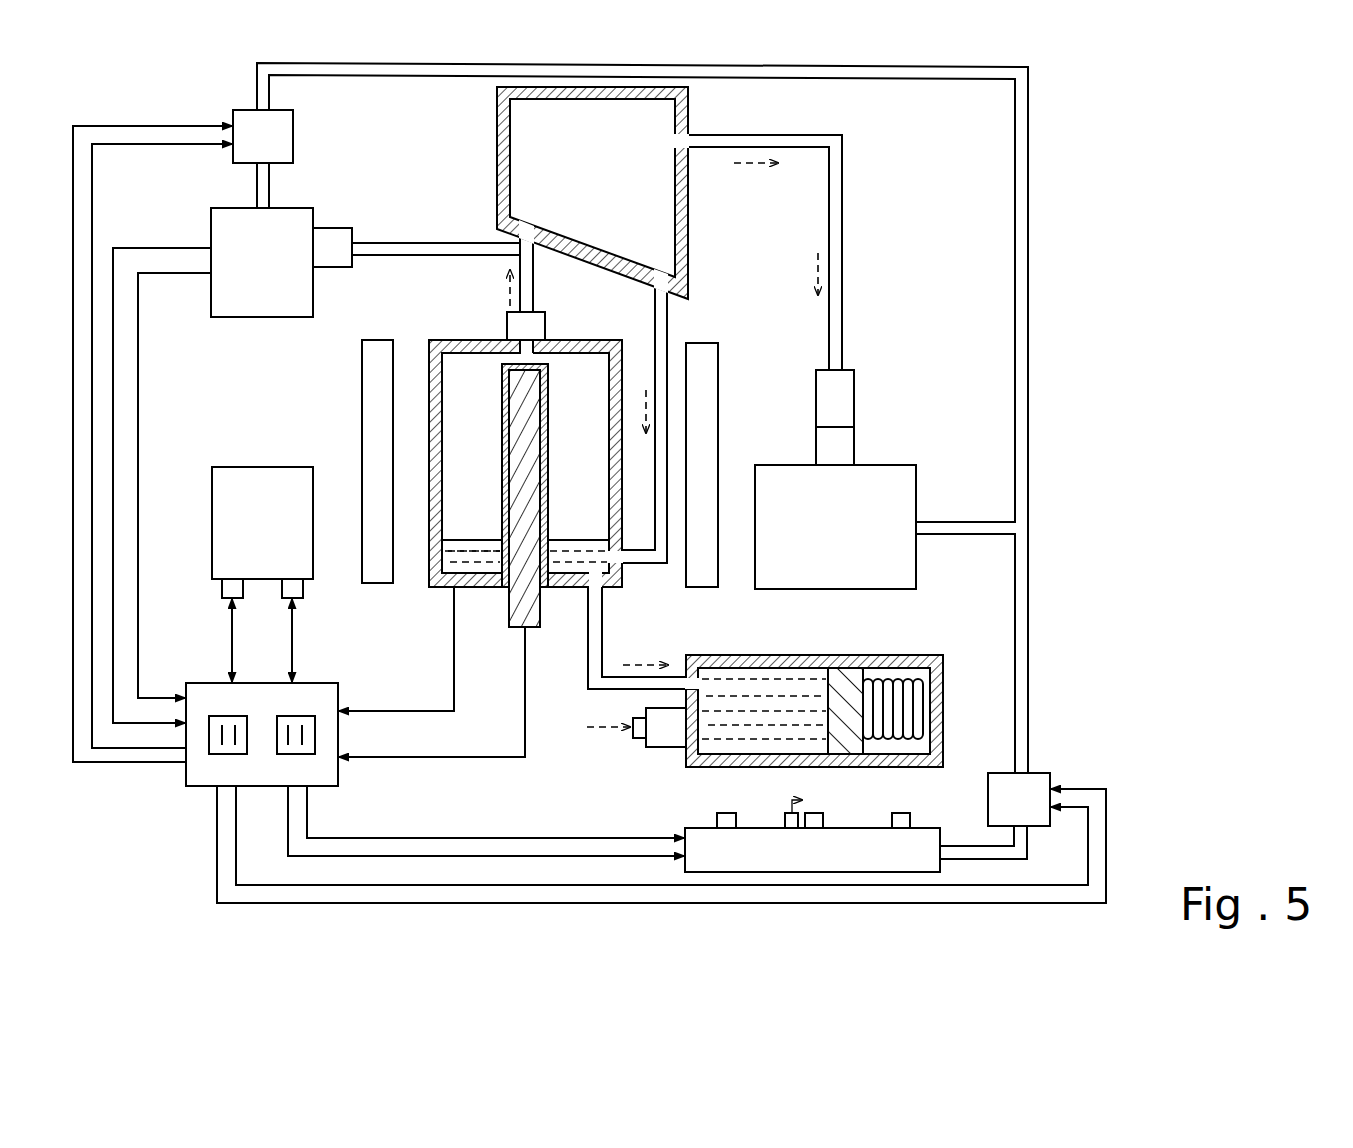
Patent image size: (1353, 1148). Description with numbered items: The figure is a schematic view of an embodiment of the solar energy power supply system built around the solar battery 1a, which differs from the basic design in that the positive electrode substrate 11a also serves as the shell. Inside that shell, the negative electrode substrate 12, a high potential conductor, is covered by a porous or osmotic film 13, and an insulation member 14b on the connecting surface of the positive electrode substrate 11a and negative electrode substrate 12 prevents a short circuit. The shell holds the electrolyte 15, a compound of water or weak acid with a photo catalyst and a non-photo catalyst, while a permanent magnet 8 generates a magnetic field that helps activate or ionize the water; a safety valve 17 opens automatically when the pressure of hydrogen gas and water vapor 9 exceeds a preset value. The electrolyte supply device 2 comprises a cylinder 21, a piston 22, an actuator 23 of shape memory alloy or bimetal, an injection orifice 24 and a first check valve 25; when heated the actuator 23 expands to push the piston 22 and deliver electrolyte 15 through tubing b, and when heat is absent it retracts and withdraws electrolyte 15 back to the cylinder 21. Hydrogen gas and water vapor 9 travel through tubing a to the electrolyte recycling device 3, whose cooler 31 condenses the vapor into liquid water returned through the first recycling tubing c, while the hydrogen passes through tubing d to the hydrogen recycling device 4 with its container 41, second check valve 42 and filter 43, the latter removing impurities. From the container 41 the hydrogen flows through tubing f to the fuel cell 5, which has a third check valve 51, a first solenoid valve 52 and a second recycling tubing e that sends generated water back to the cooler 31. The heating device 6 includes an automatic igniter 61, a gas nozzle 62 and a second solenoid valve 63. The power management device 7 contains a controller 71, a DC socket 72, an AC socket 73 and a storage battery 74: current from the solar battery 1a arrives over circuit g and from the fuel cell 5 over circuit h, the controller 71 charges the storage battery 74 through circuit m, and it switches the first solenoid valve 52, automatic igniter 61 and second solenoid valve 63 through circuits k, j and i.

The solar battery 1a is at (425, 330).
The electrolyte supply device 2 is at (777, 687).
The electrolyte recycling device 3 is at (590, 193).
The hydrogen recycling device 4 is at (830, 478).
The fuel cell 5 is at (296, 206).
The heating device 6 is at (680, 820).
The power management device 7 is at (192, 672).
The permanent magnet 8 is at (368, 380).
The hydrogen gas and water vapor 9 is at (537, 176).
The positive electrode substrate 11a is at (465, 590).
The negative electrode substrate 12 is at (518, 627).
The film 13 is at (549, 364).
The insulation member 14b is at (547, 588).
The electrolyte 15 is at (448, 554).
The safety valve 17 is at (508, 311).
The cylinder 21 is at (708, 655).
The piston 22 is at (855, 675).
The actuator 23 is at (913, 687).
The injection orifice 24 is at (632, 724).
The first check valve 25 is at (646, 744).
The cooler 31 is at (500, 114).
The container 41 is at (788, 477).
The second check valve 42 is at (818, 450).
The filter 43 is at (848, 414).
The third check valve 51 is at (328, 234).
The first solenoid valve 52 is at (285, 128).
The automatic igniter 61 is at (785, 815).
The gas nozzle 62 is at (722, 813).
The second solenoid valve 63 is at (1035, 769).
The controller 71 is at (312, 775).
The DC socket 72 is at (215, 751).
The AC socket 73 is at (310, 716).
The storage battery 74 is at (270, 466).
The tubing a is at (538, 266).
The tubing b is at (604, 655).
The first recycling tubing c is at (668, 337).
The tubing d is at (842, 230).
The second recycling tubing e is at (428, 243).
The tubing f is at (873, 79).
The circuit g is at (425, 711).
The circuit h is at (178, 244).
The circuit i is at (217, 848).
The circuit j is at (288, 835).
The circuit k is at (92, 194).
The circuit m is at (228, 656).